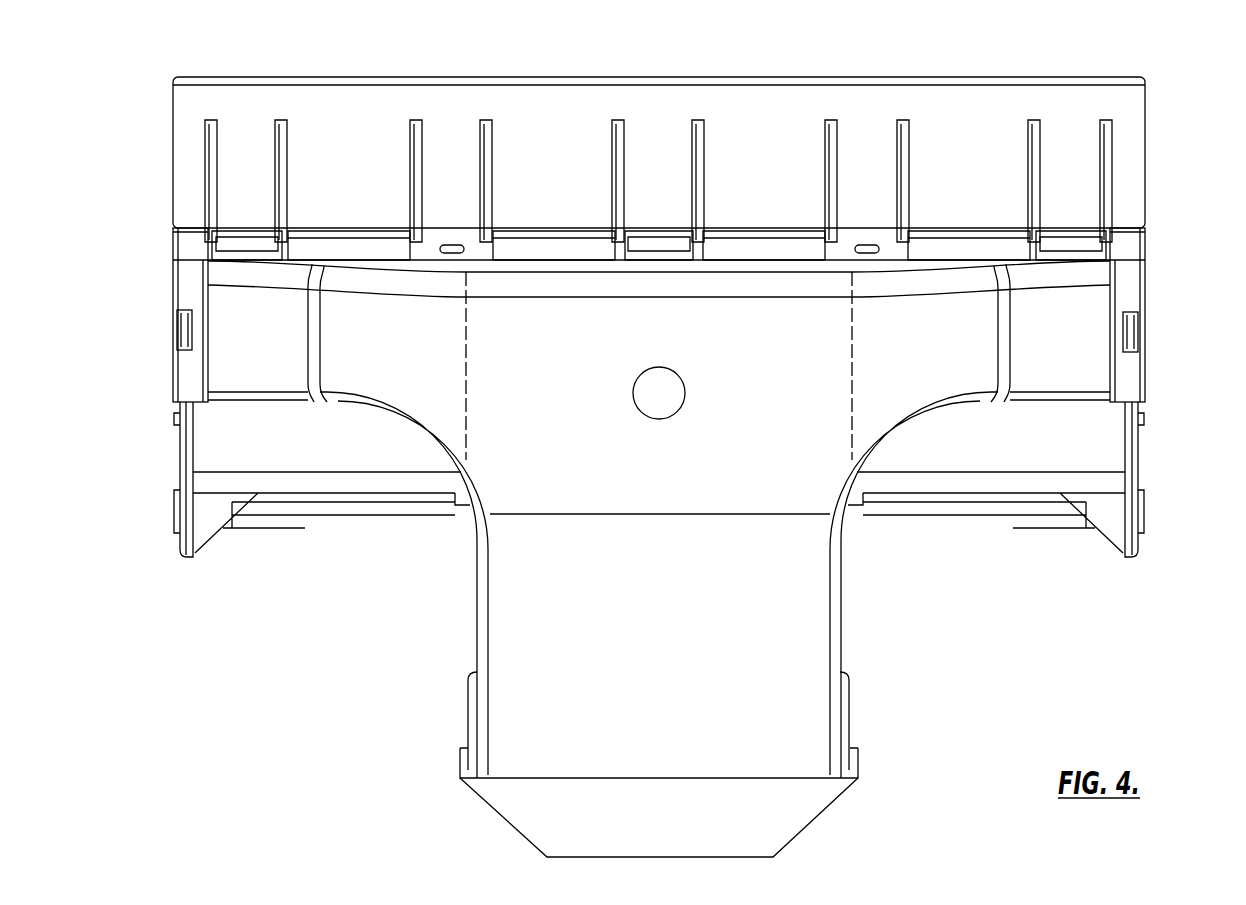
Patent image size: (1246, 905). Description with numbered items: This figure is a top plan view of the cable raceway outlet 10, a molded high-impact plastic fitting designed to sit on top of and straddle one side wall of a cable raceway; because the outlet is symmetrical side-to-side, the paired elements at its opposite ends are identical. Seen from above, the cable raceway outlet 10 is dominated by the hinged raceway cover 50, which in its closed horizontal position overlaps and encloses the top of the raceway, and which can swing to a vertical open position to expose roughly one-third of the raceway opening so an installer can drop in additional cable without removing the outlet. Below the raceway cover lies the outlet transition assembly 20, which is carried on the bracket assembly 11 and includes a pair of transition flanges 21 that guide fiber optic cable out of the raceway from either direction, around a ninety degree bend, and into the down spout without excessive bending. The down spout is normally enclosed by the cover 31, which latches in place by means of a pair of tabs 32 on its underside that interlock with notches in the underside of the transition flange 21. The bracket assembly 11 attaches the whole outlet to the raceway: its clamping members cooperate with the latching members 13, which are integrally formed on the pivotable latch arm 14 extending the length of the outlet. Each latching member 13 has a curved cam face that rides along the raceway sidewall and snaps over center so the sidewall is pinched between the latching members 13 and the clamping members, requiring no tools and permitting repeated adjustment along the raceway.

The cable raceway outlet 10 is at (651, 447).
The outlet transition assembly 20 is at (608, 148).
The hinged raceway cover 50 is at (348, 136).
The transition flange 21 is at (240, 307).
The tab 32 is at (183, 331).
The bracket assembly 11 is at (1181, 398).
The latching member 13 is at (262, 530).
The pivotable latch arm 14 is at (465, 516).
The cover 31 is at (663, 661).